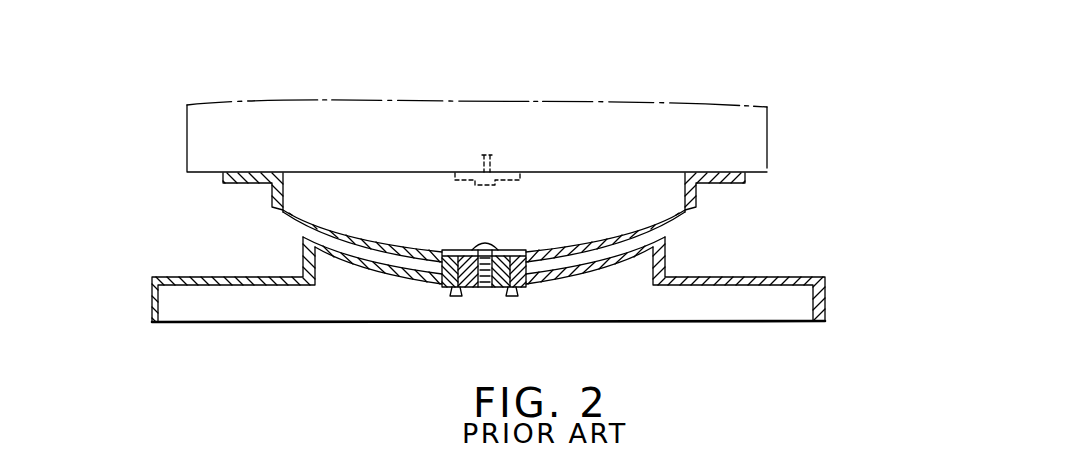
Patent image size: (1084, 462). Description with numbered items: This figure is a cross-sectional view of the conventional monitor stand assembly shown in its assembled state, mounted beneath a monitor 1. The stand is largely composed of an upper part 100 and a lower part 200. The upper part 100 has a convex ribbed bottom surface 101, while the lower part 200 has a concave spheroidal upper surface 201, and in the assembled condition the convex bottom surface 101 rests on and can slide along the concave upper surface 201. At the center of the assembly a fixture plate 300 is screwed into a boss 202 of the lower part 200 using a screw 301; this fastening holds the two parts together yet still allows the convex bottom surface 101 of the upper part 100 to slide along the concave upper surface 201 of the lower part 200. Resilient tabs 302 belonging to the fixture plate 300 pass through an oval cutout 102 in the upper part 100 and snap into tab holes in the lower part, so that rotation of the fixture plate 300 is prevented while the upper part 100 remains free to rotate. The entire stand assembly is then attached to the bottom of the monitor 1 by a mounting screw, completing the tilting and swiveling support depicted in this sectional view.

The monitor 1 is at (203, 147).
The upper part 100 is at (444, 142).
The convex ribbed bottom surface 101 is at (645, 222).
The oval cutout 102 is at (543, 255).
The lower part 200 is at (490, 287).
The concave spheroidal upper surface 201 is at (335, 237).
The boss 202 is at (500, 292).
The fixture plate 300 is at (476, 191).
The screw 301 is at (486, 243).
The resilient tabs 302 is at (437, 332).